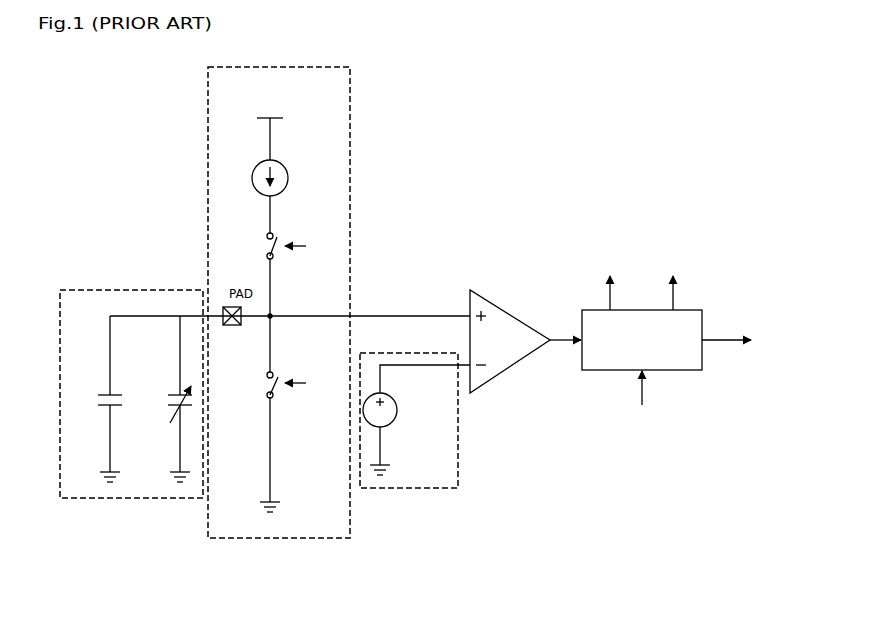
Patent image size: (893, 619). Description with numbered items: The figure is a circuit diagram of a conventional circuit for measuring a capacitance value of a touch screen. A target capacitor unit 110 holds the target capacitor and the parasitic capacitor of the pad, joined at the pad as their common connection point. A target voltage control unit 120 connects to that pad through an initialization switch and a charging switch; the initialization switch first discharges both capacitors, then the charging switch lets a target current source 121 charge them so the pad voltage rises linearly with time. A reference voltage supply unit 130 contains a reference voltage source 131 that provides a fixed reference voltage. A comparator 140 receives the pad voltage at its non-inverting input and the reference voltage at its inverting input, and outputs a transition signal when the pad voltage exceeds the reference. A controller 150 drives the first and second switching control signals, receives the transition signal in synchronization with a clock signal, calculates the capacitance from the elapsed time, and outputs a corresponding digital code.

The target capacitor unit 110 is at (128, 498).
The target voltage control unit 120 is at (279, 332).
The target current source 121 is at (262, 165).
The reference voltage supply unit 130 is at (415, 450).
The reference voltage source 131 is at (416, 420).
The comparator 140 is at (504, 308).
The controller 150 is at (600, 370).